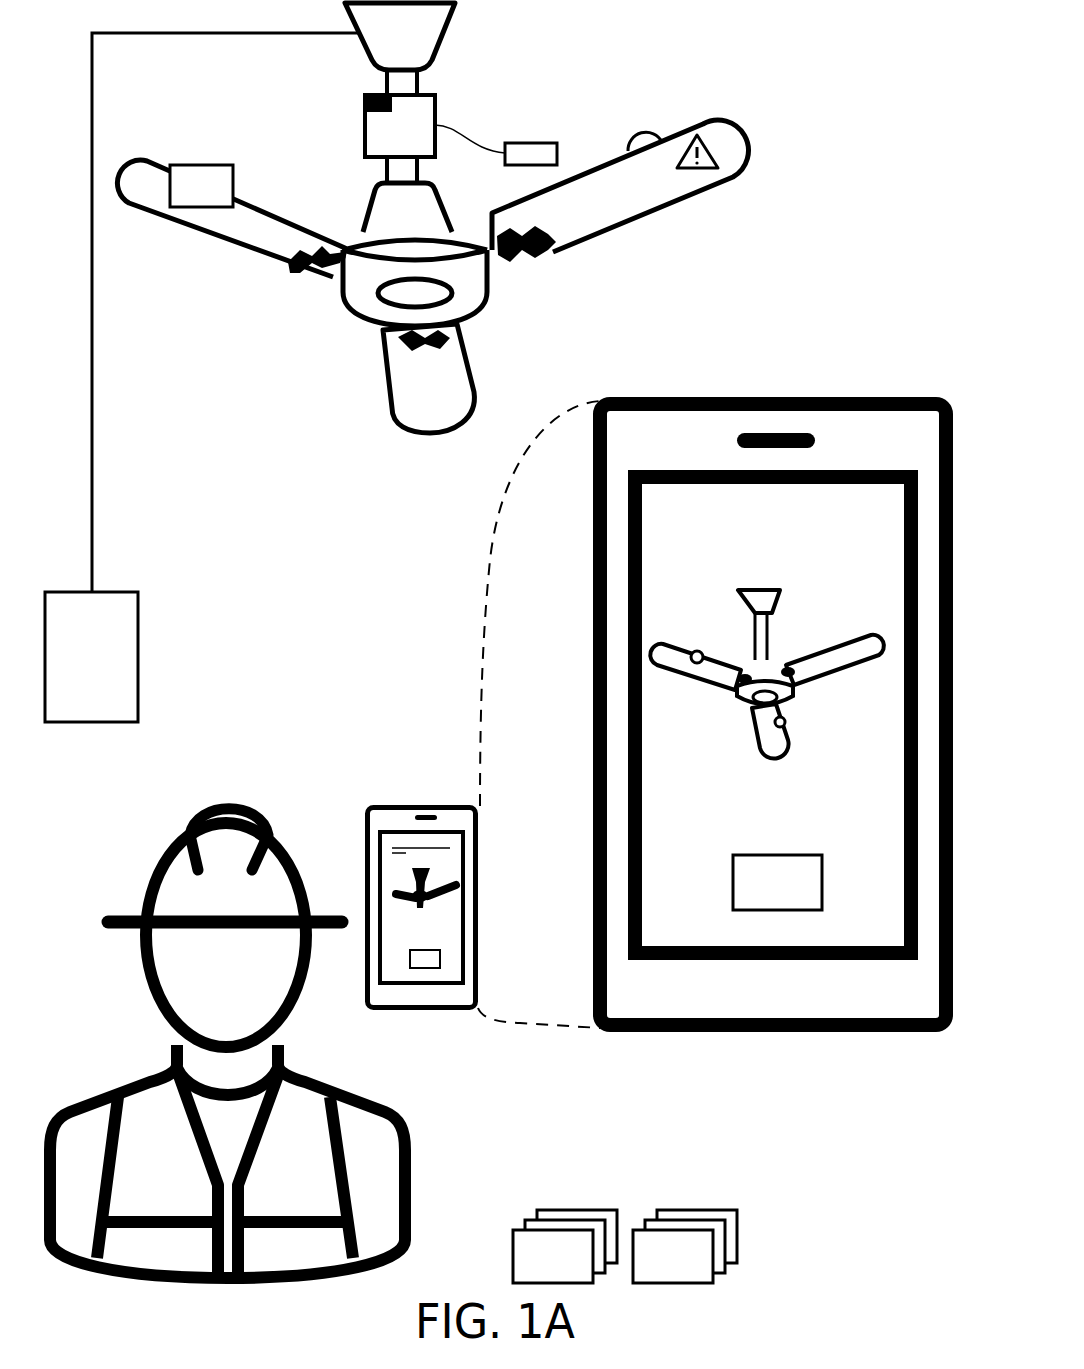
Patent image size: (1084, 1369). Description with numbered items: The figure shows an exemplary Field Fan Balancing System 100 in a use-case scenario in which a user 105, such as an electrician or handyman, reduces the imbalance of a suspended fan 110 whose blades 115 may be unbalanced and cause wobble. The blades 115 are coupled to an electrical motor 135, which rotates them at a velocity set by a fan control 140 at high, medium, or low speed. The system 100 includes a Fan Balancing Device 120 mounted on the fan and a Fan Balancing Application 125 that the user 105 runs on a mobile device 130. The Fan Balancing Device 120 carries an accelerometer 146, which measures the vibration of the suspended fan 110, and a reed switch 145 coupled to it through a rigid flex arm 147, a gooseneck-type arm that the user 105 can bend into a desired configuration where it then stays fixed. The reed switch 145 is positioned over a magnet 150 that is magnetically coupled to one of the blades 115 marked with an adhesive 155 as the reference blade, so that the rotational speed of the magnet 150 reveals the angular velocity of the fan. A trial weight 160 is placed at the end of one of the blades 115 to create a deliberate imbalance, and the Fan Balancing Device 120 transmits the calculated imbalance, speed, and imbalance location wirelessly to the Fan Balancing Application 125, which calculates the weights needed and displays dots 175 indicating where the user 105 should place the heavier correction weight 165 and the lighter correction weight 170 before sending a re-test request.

The Field Fan Balancing System 100 is at (754, 56).
The user 105 is at (330, 1082).
The suspended fan 110 is at (347, 310).
The blades 115 is at (662, 212).
The Fan Balancing Device 120 is at (363, 140).
The Fan Balancing Application 125 is at (663, 625).
The mobile device 130 is at (378, 806).
The electrical motor 135 is at (368, 205).
The fan control 140 is at (138, 655).
The reed switch 145 is at (520, 142).
The accelerometer 146 is at (365, 97).
The rigid flex arm 147 is at (478, 147).
The magnet 150 is at (640, 124).
The adhesive 155 is at (714, 157).
The trial weight 160 is at (190, 165).
The heavier correction weight 165 is at (548, 1210).
The lighter correction weight 170 is at (683, 1210).
The dots 175 is at (748, 731).